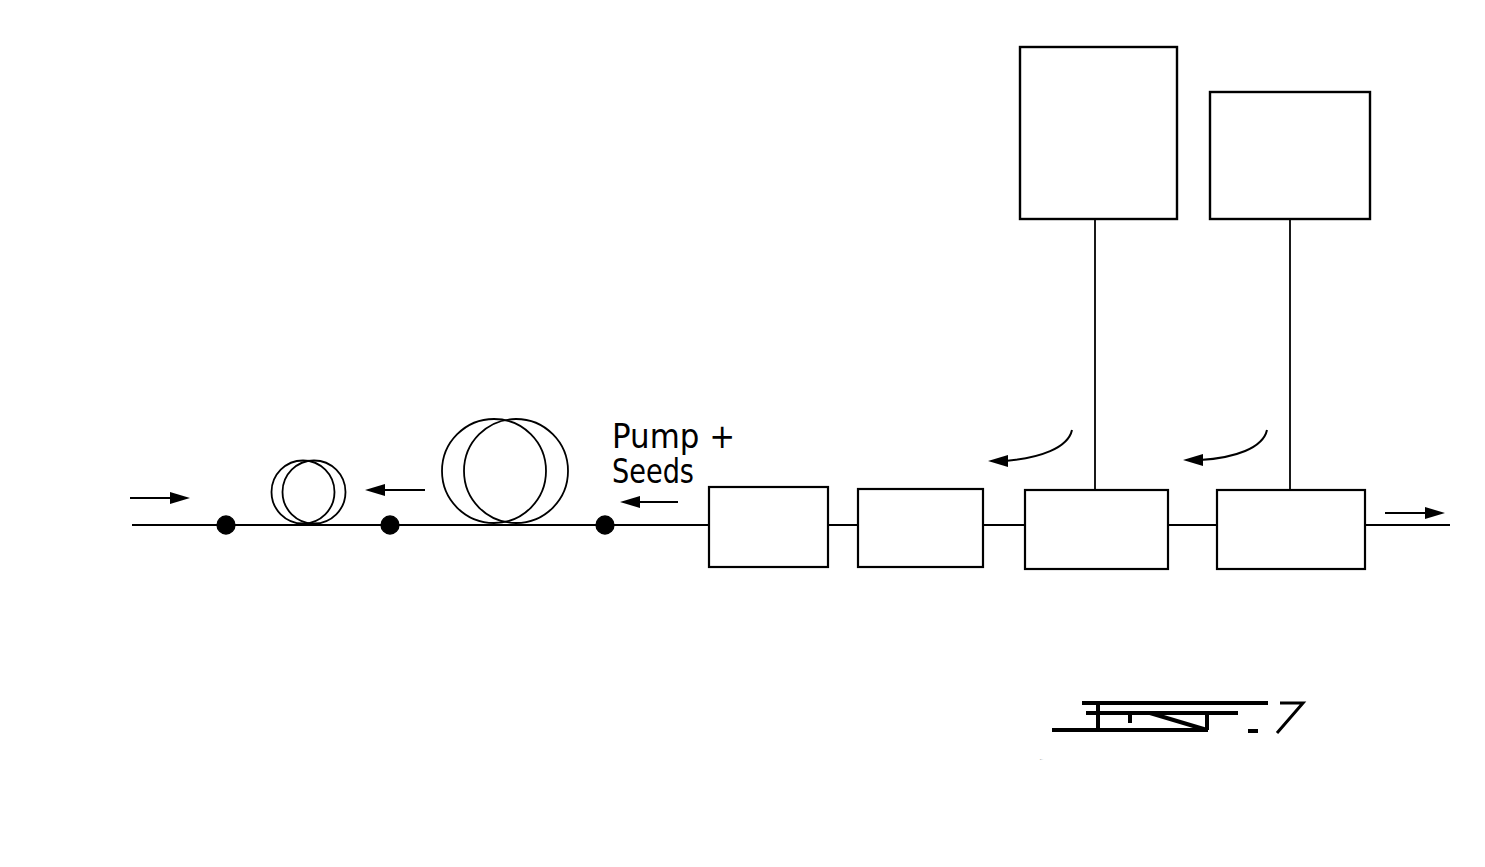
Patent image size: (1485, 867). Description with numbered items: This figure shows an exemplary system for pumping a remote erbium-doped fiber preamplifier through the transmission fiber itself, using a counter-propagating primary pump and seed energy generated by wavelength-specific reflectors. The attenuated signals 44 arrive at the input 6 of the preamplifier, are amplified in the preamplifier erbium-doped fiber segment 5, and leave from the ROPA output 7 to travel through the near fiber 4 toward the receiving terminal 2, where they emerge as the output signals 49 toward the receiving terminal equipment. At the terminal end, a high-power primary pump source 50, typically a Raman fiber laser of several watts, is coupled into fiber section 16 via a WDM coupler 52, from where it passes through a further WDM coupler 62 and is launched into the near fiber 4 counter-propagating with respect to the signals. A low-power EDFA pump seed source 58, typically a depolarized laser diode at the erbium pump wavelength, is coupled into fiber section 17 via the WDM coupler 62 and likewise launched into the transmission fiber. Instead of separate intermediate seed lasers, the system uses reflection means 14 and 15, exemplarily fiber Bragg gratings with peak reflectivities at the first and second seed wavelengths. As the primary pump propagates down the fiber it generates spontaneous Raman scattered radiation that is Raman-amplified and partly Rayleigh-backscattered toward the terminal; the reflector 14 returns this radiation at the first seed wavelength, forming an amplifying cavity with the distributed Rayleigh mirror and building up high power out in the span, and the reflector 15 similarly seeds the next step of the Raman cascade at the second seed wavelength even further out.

The receiving terminal 2 is at (604, 535).
The near fiber 4 is at (496, 418).
The preamplifier erbium-doped fiber segment 5 is at (314, 460).
The input of the ROPA preamplifier 6 is at (226, 535).
The ROPA output 7 is at (390, 535).
The reflection means 14 is at (766, 568).
The reflection means 15 is at (916, 568).
The fiber section 16 is at (1193, 528).
The fiber section 17 is at (1005, 527).
The attenuated signals 44 is at (170, 453).
The output signals 49 is at (1402, 470).
The primary pump source 50 is at (1258, 92).
The WDM coupler 52 is at (1265, 570).
The EDFA pump seed source 58 is at (1020, 165).
The WDM coupler 62 is at (1075, 570).